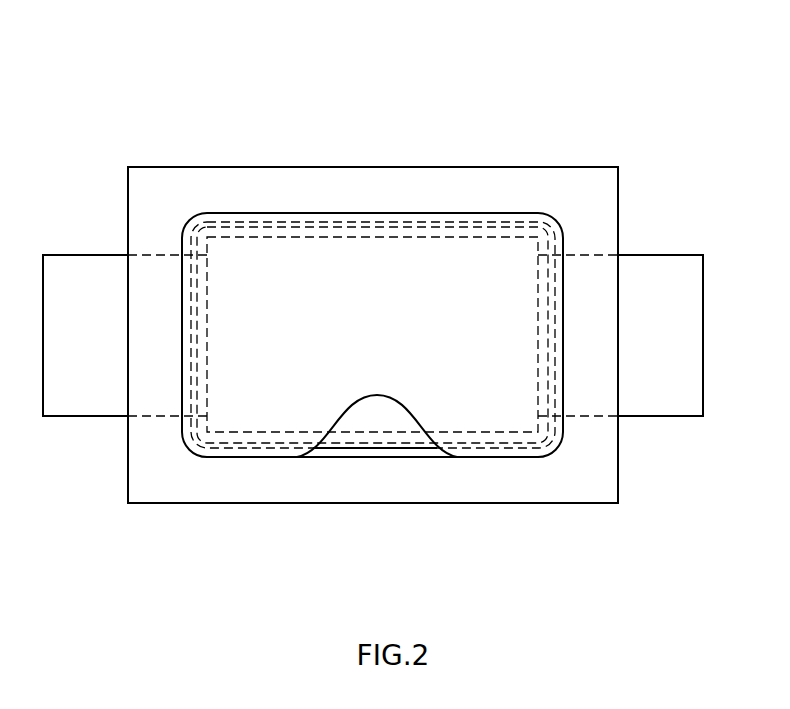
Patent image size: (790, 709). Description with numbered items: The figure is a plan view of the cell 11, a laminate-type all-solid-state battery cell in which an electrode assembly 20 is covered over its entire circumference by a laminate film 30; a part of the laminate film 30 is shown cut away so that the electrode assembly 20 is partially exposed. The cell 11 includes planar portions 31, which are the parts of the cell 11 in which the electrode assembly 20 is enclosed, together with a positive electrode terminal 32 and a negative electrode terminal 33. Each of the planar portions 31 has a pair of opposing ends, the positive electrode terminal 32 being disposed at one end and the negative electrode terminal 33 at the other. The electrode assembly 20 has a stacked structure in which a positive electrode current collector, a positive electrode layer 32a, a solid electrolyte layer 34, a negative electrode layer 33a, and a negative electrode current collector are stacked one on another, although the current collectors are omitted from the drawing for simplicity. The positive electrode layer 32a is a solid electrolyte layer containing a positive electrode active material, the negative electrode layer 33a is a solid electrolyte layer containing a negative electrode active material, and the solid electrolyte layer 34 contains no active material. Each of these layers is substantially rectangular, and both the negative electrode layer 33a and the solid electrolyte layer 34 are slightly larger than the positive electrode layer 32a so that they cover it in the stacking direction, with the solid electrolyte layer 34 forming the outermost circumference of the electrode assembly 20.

The cell 11 is at (200, 80).
The electrode assembly 20 is at (412, 450).
The laminate film 30 is at (568, 183).
The planar portions 31 is at (483, 219).
The positive electrode terminal 32 is at (78, 253).
The positive electrode layer 32a is at (400, 230).
The negative electrode terminal 33 is at (655, 253).
The negative electrode layer 33a is at (302, 222).
The solid electrolyte layer 34 is at (355, 449).